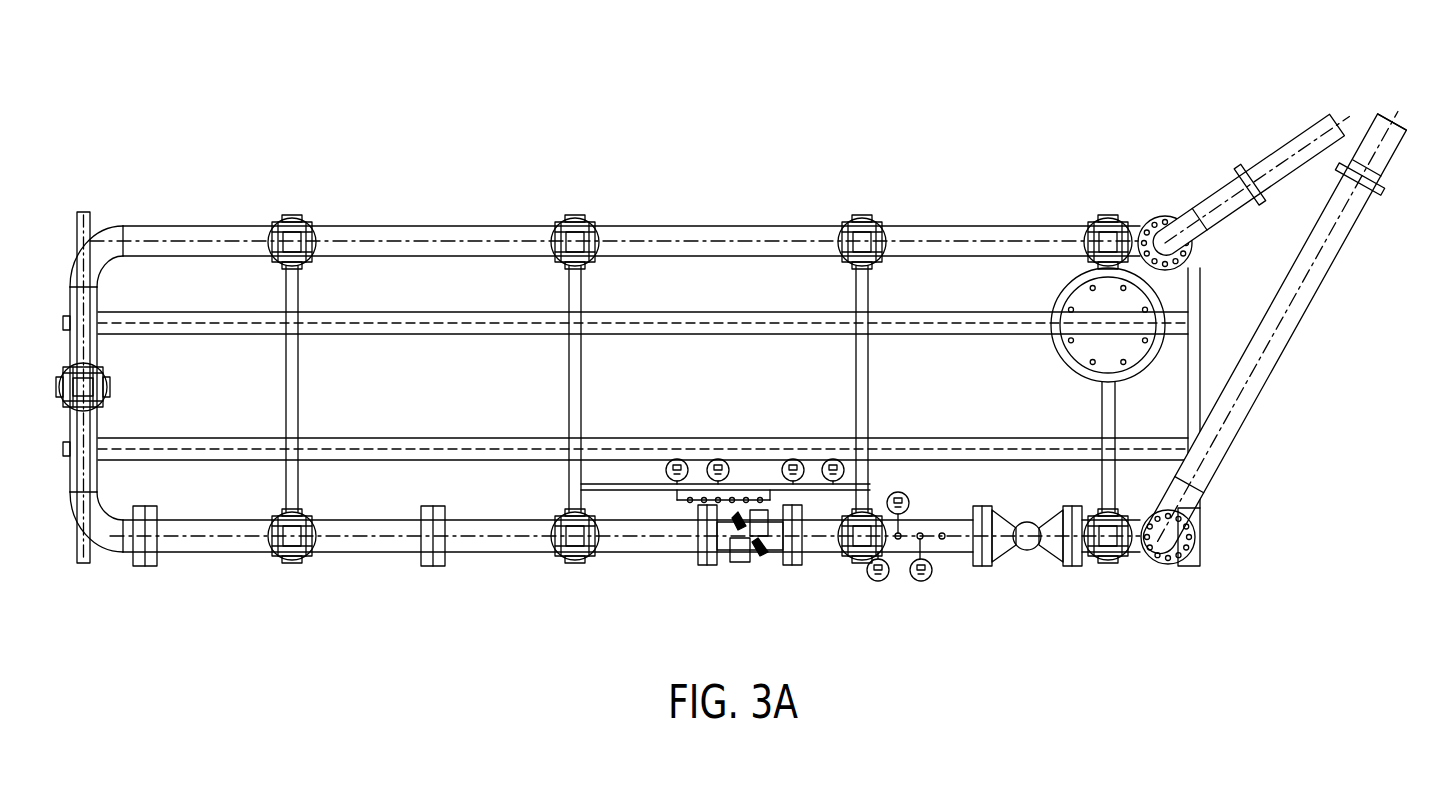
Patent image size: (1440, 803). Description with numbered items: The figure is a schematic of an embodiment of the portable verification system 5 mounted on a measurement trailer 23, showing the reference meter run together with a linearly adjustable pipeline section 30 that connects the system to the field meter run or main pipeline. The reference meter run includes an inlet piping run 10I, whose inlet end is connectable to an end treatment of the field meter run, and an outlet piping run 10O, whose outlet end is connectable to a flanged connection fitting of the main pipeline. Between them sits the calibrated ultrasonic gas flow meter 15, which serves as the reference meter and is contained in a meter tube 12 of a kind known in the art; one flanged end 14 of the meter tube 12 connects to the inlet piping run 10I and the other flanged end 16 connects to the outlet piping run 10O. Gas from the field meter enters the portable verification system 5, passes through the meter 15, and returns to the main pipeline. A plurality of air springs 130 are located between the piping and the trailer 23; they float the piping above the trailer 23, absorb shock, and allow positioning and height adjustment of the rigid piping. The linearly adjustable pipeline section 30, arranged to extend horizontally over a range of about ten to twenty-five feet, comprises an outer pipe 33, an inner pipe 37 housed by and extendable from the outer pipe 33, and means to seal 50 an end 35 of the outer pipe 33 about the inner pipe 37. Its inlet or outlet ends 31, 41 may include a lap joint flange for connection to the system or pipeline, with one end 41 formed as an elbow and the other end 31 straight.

The portable verification system 5 is at (424, 127).
The inlet piping run 10I is at (700, 226).
The outlet piping run 10O is at (825, 553).
The meter tube 12 is at (770, 560).
The flanged end 14 is at (712, 565).
The calibrated ultrasonic gas flow meter 15 is at (740, 562).
The flanged end 16 is at (785, 565).
The measurement trailer 23 is at (445, 292).
The linearly adjustable pipeline section 30 is at (1308, 381).
The inlet or outlet end 31 is at (1170, 568).
The outer pipe 33 is at (1381, 180).
The end of the outer pipe 35 is at (1375, 200).
The inner pipe 37 is at (1222, 456).
The inlet or outlet end 41 is at (1156, 215).
The means to seal 50 is at (1240, 165).
The air springs 130 is at (878, 228).